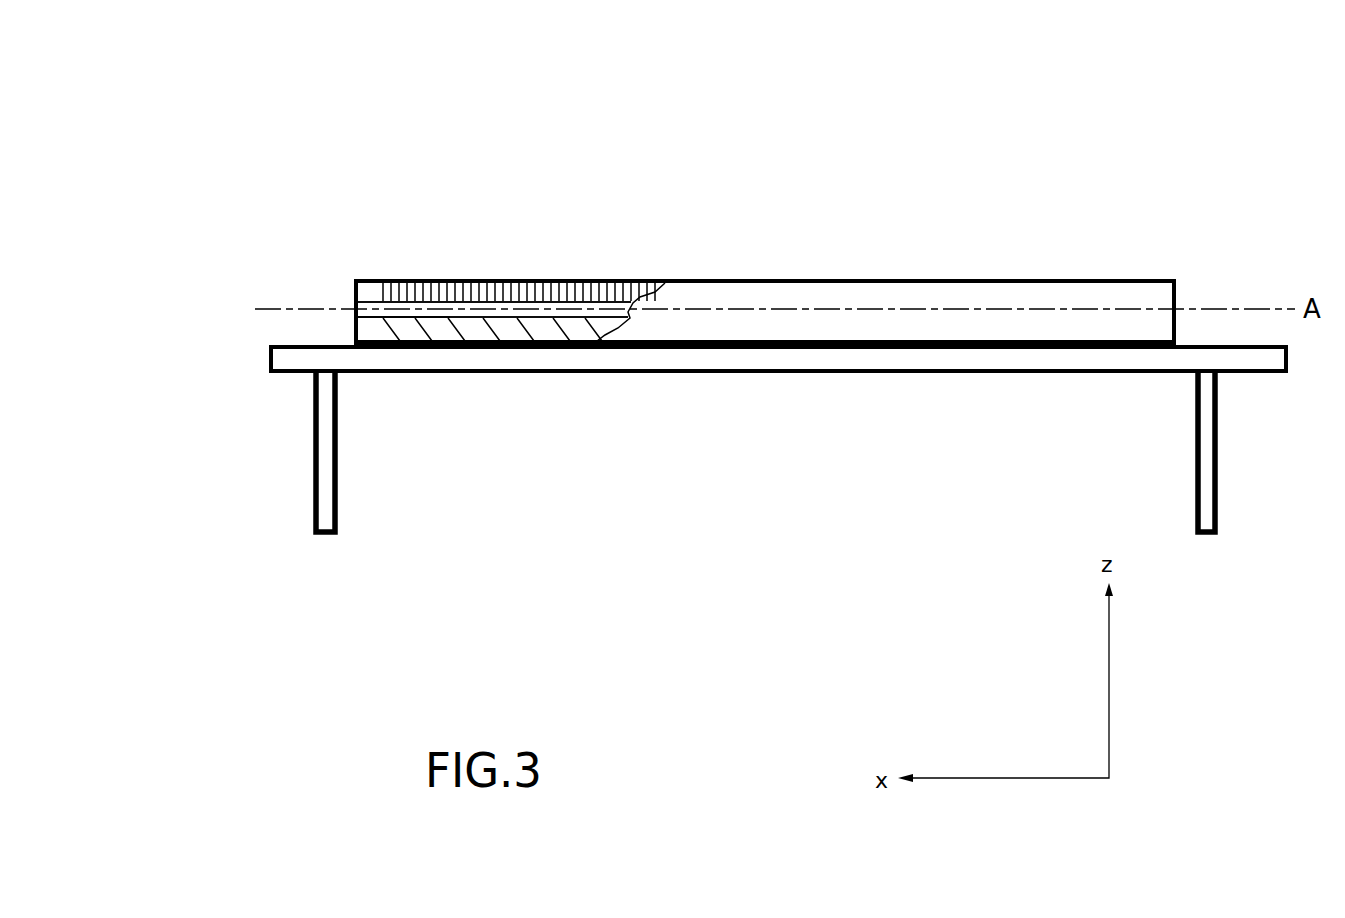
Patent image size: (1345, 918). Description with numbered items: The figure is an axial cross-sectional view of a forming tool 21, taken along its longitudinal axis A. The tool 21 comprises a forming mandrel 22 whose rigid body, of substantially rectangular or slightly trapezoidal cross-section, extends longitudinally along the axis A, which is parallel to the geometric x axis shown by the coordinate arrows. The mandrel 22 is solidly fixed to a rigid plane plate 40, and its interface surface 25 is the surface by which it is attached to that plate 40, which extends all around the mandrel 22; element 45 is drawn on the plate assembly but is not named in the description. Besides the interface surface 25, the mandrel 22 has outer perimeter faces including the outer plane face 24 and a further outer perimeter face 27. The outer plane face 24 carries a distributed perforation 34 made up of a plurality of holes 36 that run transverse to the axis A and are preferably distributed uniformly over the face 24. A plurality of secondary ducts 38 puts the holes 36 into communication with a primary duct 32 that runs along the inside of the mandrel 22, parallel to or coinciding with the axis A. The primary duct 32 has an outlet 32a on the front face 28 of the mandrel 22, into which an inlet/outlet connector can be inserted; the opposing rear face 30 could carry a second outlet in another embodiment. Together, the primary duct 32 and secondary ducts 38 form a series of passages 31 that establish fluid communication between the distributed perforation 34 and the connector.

The forming tool 21 is at (1124, 228).
The forming mandrel 22 is at (975, 266).
The outer plane face 24 is at (820, 280).
The interface surface 25 is at (797, 347).
The outer perimeter face 27 is at (931, 322).
The front face 28 is at (375, 301).
The rear face 30 is at (1183, 297).
The series of passages 31 is at (466, 343).
The primary duct 32 is at (465, 312).
The outlet 32a is at (356, 313).
The distributed perforation 34 is at (630, 262).
The holes 36 is at (550, 281).
The secondary ducts 38 is at (402, 281).
The rigid plane plate 40 is at (546, 390).
The support legs 45 is at (1050, 373).